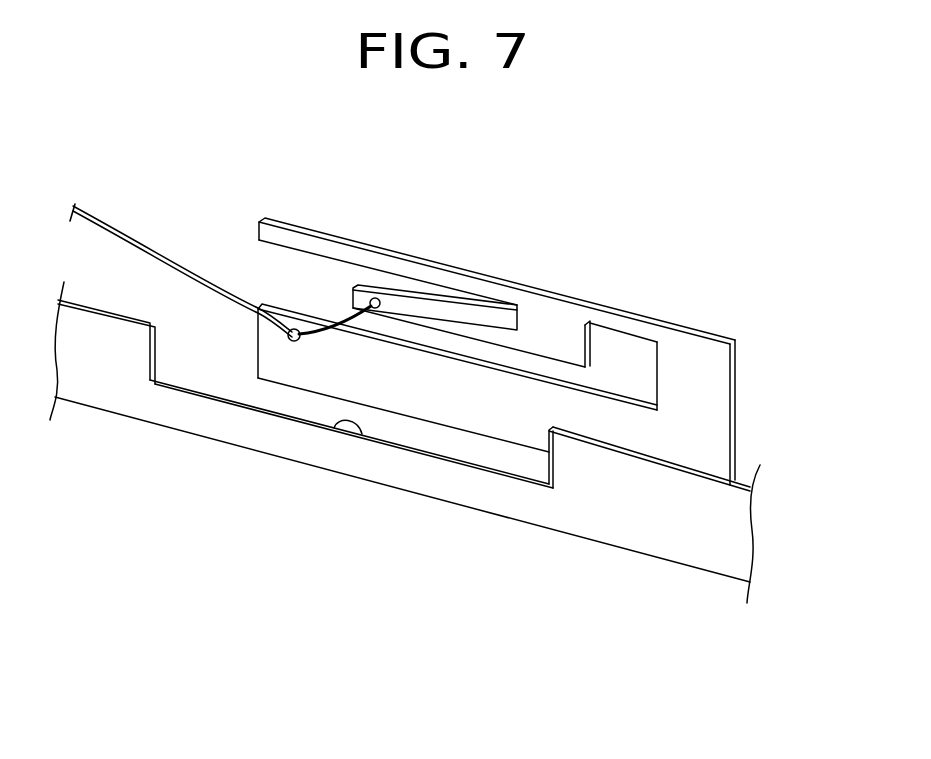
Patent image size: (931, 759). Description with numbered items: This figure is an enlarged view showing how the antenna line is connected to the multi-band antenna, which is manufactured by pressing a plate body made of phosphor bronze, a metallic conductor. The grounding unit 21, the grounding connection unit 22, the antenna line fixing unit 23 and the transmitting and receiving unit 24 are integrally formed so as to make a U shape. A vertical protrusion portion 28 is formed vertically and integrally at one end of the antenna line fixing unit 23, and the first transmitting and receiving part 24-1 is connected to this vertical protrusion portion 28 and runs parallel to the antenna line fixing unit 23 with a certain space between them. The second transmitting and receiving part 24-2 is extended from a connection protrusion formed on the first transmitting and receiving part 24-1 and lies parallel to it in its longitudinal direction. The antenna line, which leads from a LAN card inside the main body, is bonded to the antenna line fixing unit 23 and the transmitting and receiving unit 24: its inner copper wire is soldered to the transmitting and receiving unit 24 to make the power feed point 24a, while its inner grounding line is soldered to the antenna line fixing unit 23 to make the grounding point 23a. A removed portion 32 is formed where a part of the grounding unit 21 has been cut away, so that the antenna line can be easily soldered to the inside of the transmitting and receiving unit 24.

The grounding unit 21 is at (130, 237).
The grounding connection unit 22 is at (253, 392).
The antenna line fixing unit 23 is at (518, 388).
The grounding point 23a is at (294, 328).
The transmitting and receiving unit 24 is at (537, 148).
The first transmitting and receiving part 24-1 is at (451, 277).
The second transmitting and receiving part 24-2 is at (489, 328).
The power feed point 24a is at (374, 297).
The vertical protrusion portion 28 is at (708, 380).
The removed portion 32 is at (333, 426).